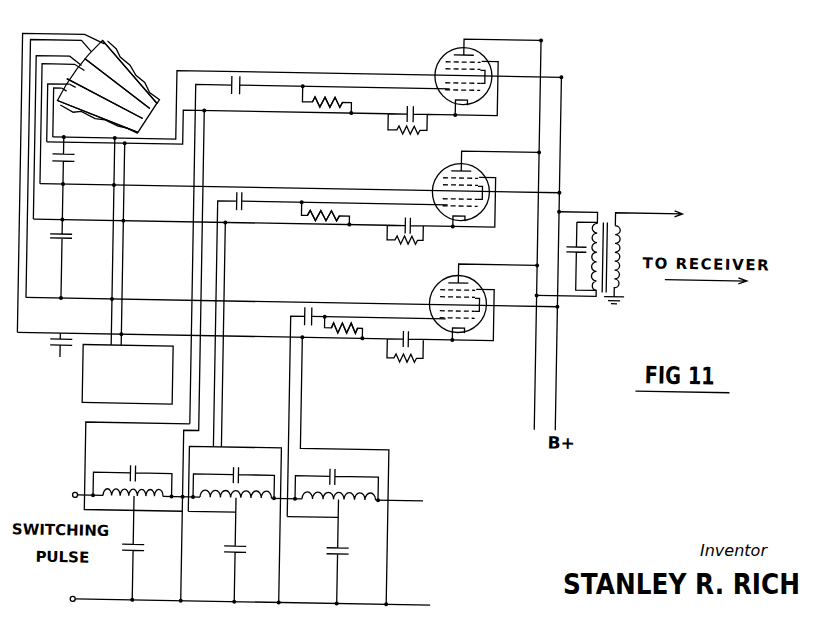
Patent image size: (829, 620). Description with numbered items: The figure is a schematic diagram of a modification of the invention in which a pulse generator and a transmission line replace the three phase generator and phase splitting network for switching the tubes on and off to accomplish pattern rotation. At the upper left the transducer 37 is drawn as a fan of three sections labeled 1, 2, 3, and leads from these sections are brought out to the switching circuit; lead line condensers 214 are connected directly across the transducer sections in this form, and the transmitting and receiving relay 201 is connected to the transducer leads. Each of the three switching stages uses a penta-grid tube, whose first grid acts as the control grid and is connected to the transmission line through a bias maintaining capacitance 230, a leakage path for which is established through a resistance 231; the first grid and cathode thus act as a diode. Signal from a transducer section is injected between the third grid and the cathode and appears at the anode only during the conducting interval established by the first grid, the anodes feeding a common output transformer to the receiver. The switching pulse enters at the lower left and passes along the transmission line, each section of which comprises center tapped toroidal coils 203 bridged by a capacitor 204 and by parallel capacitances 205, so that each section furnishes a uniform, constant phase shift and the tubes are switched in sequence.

The transducer 37 is at (135, 69).
The transducer segment 1 is at (100, 105).
The transducer segment 2 is at (108, 88).
The transducer segment 3 is at (121, 74).
The lead line condensers 214 is at (69, 161).
The transmitting and receiving relay 201 is at (84, 399).
The bias maintaining capacitance 230 is at (238, 94).
The resistance 231 is at (324, 110).
The center tapped toroidal coils 203 is at (157, 507).
The capacitor 204 is at (130, 470).
The parallel capacitances 205 is at (152, 553).